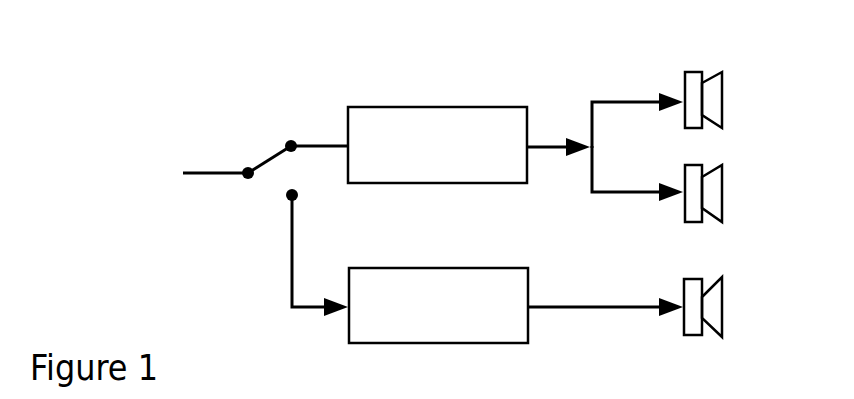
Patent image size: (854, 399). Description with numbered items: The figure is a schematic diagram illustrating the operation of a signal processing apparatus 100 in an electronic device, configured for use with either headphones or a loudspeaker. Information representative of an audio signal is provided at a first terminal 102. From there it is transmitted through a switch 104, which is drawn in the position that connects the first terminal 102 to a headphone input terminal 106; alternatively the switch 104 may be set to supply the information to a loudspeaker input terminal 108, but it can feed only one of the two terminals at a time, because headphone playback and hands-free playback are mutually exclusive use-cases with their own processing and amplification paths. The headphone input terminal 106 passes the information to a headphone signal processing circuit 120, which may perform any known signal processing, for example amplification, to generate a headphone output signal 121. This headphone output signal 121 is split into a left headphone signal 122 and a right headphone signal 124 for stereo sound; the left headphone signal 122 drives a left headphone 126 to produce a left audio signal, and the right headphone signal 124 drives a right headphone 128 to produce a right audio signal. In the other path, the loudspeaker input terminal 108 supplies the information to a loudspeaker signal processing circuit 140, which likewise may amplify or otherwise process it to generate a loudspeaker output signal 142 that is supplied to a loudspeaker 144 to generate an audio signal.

The signal processing apparatus 100 is at (168, 96).
The first terminal 102 is at (207, 168).
The switch 104 is at (277, 158).
The headphone input terminal 106 is at (290, 140).
The loudspeaker input terminal 108 is at (287, 197).
The headphone signal processing circuit 120 is at (425, 107).
The headphone output signal 121 is at (541, 142).
The left headphone signal 122 is at (623, 100).
The right headphone signal 124 is at (608, 193).
The left headphone 126 is at (723, 102).
The right headphone 128 is at (723, 188).
The loudspeaker signal processing circuit 140 is at (437, 268).
The loudspeaker output signal 142 is at (580, 309).
The loudspeaker 144 is at (723, 305).